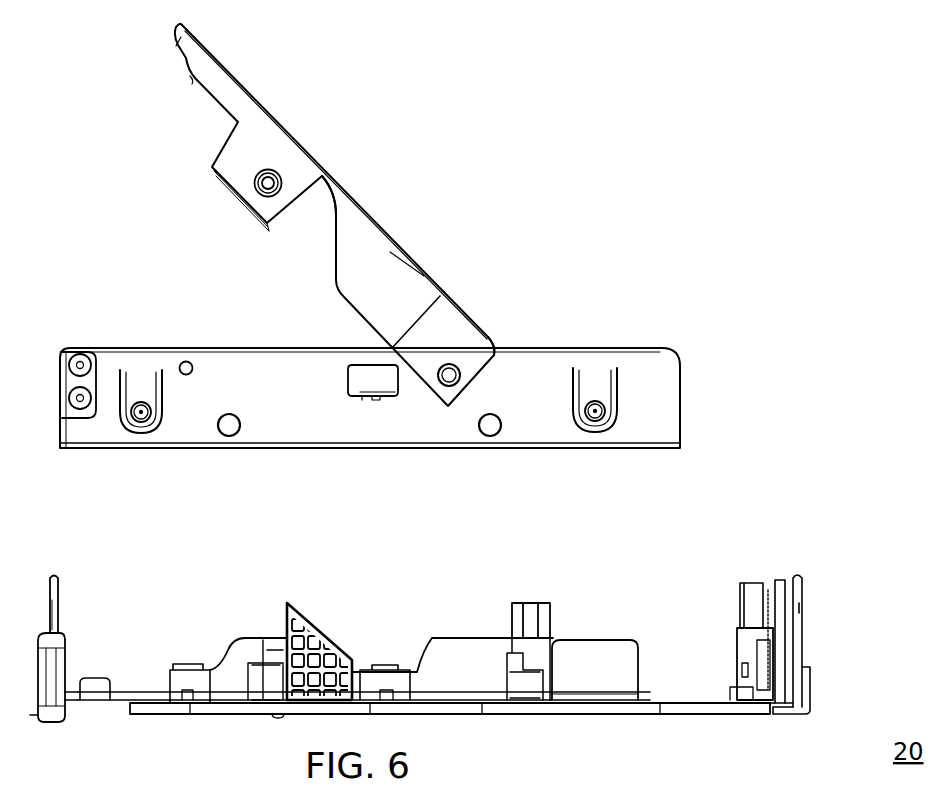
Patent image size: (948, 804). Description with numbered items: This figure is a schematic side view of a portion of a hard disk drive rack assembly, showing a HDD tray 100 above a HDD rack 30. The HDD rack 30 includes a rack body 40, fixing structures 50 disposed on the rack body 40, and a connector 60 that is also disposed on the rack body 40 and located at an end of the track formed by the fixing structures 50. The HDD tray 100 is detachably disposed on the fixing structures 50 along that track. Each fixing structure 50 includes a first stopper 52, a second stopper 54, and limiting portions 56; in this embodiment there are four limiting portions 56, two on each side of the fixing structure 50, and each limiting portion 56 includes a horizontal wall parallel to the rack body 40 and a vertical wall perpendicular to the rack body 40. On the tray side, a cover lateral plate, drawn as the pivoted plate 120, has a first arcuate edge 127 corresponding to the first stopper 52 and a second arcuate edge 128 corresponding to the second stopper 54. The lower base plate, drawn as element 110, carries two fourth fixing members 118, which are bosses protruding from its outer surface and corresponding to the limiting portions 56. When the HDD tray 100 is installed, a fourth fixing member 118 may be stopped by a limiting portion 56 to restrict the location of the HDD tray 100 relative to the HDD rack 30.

The HDD tray 100 is at (643, 147).
The base plate 110 is at (680, 408).
The fourth fixing member 118 is at (232, 438).
The pivoting bracket 120 is at (376, 221).
The first arcuate edge 127 is at (503, 355).
The second arcuate edge 128 is at (336, 238).
The HDD rack 30 is at (834, 593).
The rack body 40 is at (624, 713).
The fixing structure 50 is at (306, 562).
The first stopper 52 is at (508, 617).
The second stopper 54 is at (323, 632).
The limiting portion 56 is at (277, 688).
The connector 60 is at (758, 650).